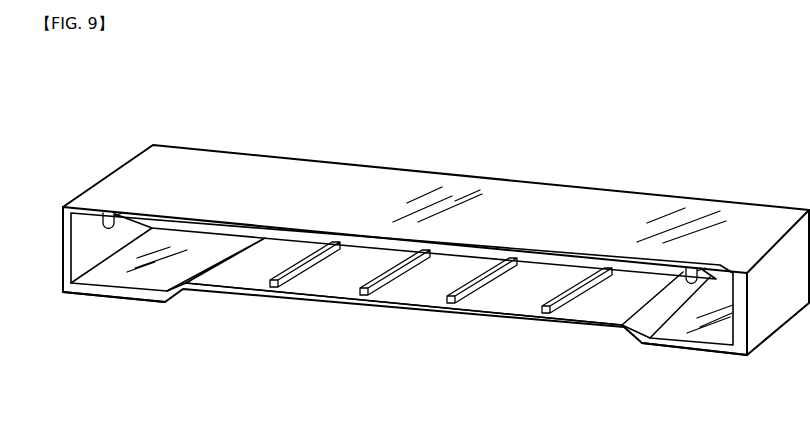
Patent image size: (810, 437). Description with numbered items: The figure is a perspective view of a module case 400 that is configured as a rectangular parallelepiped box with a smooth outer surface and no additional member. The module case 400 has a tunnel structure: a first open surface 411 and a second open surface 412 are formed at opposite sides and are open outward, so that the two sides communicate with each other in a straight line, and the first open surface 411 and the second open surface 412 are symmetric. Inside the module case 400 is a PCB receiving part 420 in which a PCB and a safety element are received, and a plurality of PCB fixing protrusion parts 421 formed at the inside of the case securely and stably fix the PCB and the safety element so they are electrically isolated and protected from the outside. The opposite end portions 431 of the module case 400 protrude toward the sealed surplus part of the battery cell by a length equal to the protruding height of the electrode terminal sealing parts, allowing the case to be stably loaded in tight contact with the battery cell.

The module case 400 is at (143, 110).
The first open surface 411 is at (119, 266).
The second open surface 412 is at (185, 226).
The PCB receiving part 420 is at (534, 281).
The PCB fixing protrusion parts 421 is at (106, 213).
The opposite end portions 431 is at (150, 303).